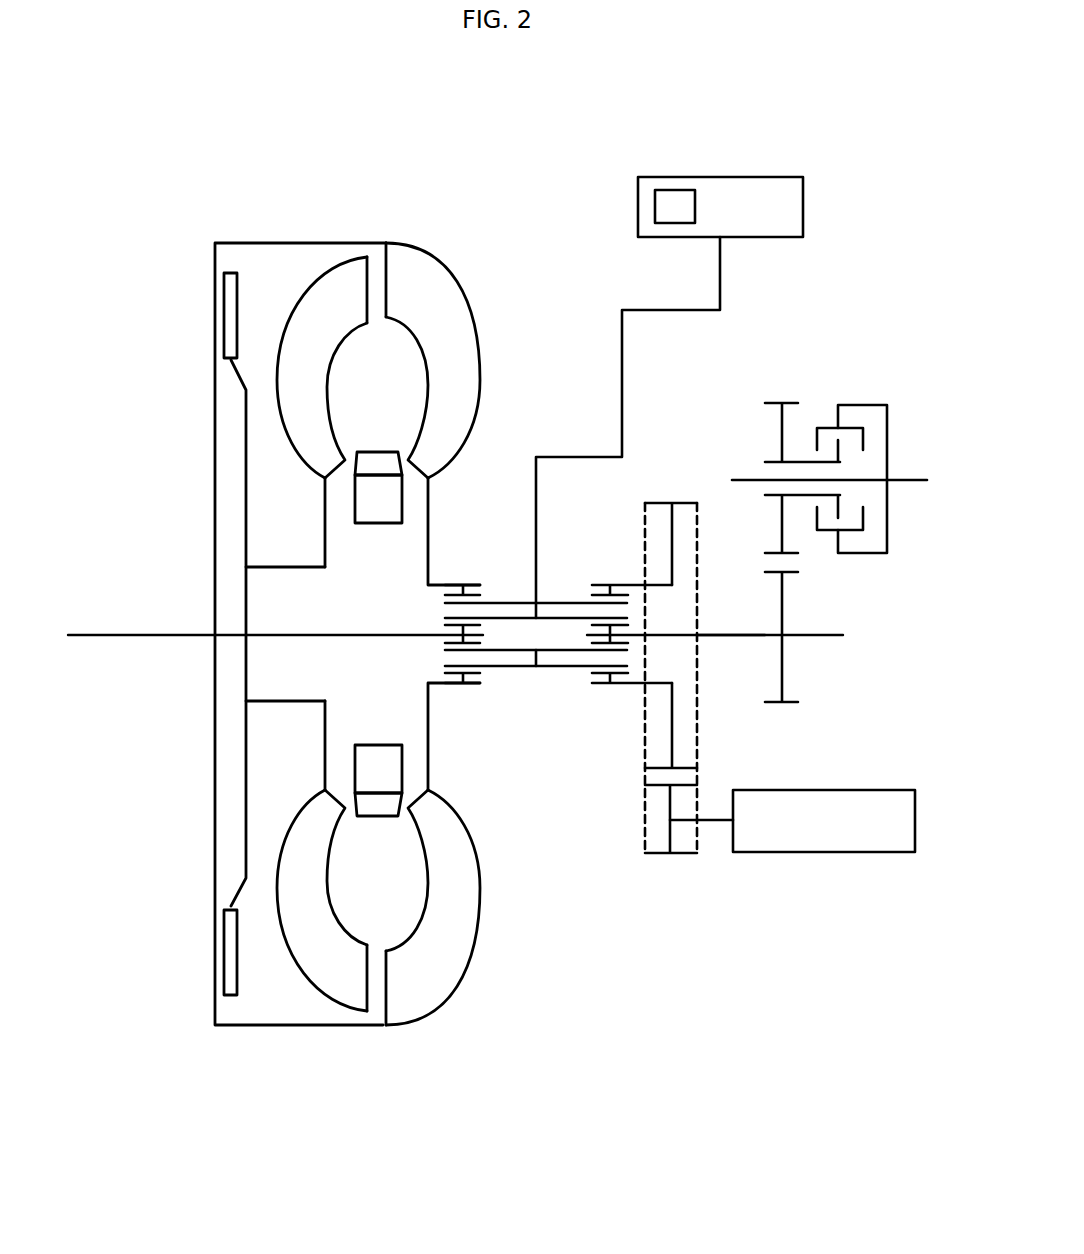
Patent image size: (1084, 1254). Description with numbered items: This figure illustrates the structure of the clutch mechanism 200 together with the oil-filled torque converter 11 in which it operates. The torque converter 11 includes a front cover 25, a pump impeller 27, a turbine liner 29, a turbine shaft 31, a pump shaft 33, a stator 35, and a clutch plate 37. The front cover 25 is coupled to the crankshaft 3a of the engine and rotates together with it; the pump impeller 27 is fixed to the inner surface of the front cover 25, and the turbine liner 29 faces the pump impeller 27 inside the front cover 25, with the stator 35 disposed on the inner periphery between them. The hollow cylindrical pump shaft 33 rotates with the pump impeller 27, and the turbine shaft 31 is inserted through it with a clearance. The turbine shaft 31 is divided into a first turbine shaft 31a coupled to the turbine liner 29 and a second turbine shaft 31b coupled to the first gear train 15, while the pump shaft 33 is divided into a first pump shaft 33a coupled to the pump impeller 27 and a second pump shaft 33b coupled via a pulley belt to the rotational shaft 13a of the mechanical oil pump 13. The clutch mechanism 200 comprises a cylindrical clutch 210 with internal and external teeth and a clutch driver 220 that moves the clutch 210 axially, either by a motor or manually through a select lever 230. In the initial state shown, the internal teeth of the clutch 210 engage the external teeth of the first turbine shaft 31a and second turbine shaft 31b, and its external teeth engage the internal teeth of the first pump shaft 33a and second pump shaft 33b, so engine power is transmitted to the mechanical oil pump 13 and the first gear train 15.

The crankshaft 3a is at (131, 634).
The torque converter 11 is at (453, 193).
The mechanical oil pump 13 is at (825, 852).
The rotational shaft 13a is at (716, 822).
The first gear train 15 is at (792, 383).
The front cover 25 is at (210, 927).
The pump impeller 27 is at (460, 977).
The turbine liner 29 is at (348, 1012).
The turbine shaft 31 is at (834, 627).
The first turbine shaft 31a is at (432, 637).
The second turbine shaft 31b is at (730, 636).
The pump shaft 33 is at (639, 493).
The first pump shaft 33a is at (467, 585).
The second pump shaft 33b is at (608, 585).
The stator 35 is at (402, 763).
The clutch plate 37 is at (230, 997).
The clutch mechanism 200 is at (833, 92).
The clutch 210 is at (513, 667).
The clutch driver 220 is at (727, 160).
The select lever 230 is at (655, 205).